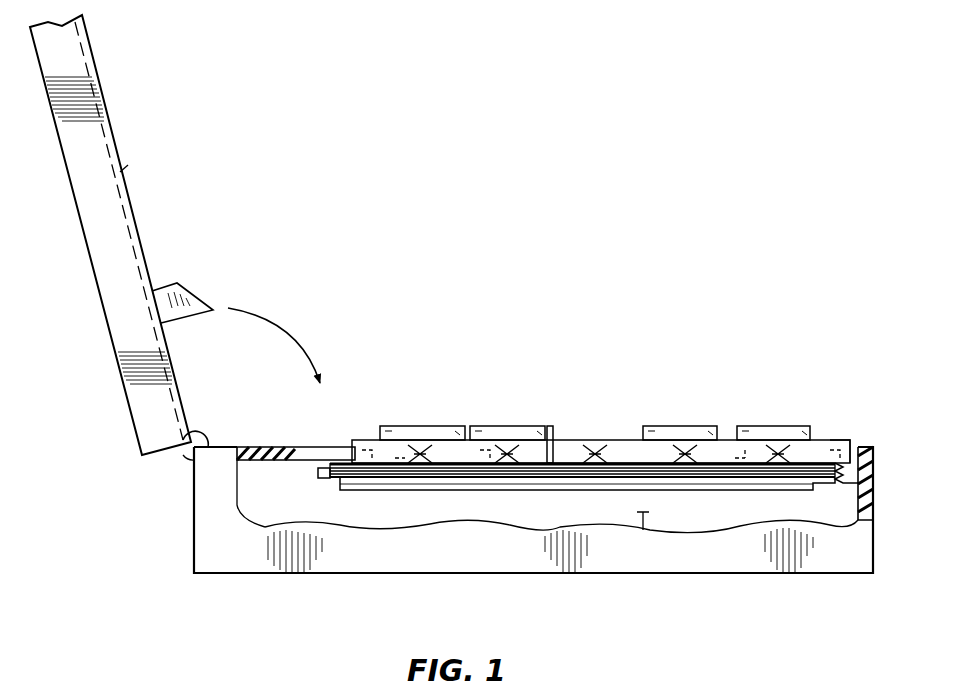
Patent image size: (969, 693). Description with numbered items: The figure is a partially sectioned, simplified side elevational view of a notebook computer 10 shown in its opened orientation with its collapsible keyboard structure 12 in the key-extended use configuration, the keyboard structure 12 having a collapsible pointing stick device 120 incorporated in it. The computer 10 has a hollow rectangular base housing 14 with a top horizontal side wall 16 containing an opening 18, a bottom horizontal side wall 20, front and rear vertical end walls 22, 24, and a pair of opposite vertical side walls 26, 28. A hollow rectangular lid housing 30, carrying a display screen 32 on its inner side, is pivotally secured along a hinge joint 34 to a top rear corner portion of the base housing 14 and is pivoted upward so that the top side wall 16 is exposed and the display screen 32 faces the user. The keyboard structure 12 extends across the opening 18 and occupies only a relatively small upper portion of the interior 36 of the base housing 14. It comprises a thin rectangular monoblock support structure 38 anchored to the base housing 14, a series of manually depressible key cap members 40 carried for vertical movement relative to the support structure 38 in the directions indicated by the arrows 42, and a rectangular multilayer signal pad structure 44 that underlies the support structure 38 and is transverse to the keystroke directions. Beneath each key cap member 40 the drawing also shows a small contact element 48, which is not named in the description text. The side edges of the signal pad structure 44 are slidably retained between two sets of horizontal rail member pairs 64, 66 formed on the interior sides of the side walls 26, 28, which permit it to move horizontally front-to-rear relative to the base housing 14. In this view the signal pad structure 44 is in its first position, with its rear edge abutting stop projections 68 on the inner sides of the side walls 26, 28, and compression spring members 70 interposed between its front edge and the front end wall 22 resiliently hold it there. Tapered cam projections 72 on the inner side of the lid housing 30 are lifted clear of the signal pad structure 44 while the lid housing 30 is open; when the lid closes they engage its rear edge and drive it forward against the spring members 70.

The notebook computer 10 is at (115, 511).
The collapsible keyboard structure 12 is at (658, 412).
The base housing 14 is at (345, 575).
The top horizontal side wall 16 is at (240, 447).
The opening 18 is at (312, 447).
The bottom horizontal side wall 20 is at (560, 575).
The front vertical end wall 22 is at (858, 520).
The rear vertical end wall 24 is at (194, 512).
The vertical side wall 26 is at (686, 562).
The vertical side wall 28 is at (735, 522).
The lid housing 30 is at (78, 220).
The display screen 32 is at (120, 172).
The hinge joint 34 is at (183, 458).
The interior 36 is at (643, 530).
The monoblock support structure 38 is at (850, 440).
The key cap members 40 is at (393, 440).
The arrows 42 is at (418, 410).
The signal pad structure 44 is at (625, 478).
The spring contacts 48 is at (440, 455).
The rail member pair 64 is at (352, 446).
The rail member pair 66 is at (372, 490).
The stop projections 68 is at (318, 473).
The compression spring members 70 is at (842, 485).
The tapered cam projections 72 is at (200, 300).
The collapsible pointing stick device 120 is at (553, 420).